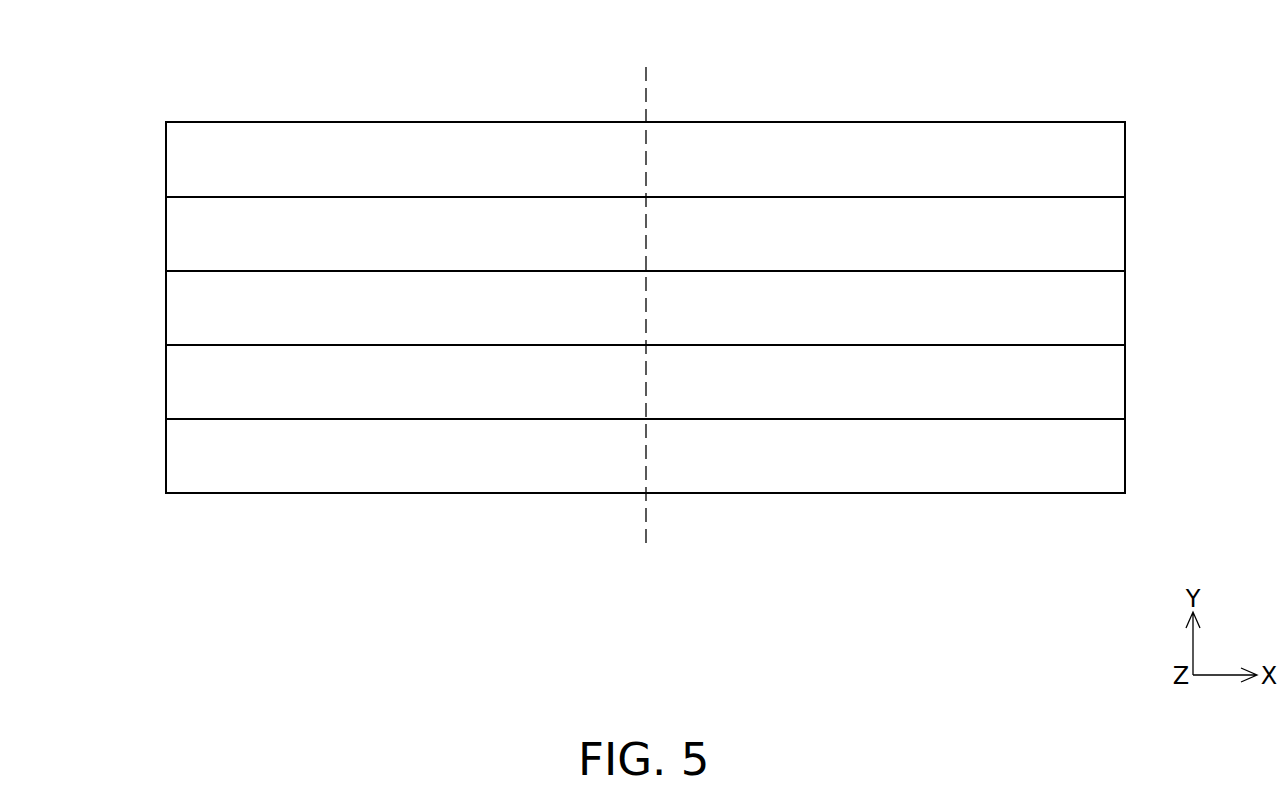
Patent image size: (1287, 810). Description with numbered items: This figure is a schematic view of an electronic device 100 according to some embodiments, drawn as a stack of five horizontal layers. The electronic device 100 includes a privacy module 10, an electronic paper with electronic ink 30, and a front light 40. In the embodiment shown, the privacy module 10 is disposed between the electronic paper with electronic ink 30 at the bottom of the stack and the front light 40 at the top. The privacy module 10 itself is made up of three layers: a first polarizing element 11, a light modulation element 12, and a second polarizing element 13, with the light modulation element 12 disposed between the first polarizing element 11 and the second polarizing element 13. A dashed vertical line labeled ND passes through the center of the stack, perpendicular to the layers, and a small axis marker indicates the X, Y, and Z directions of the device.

The electronic device 100 is at (165, 31).
The front light 40 is at (187, 160).
The privacy module 10 is at (108, 222).
The first polarizing element 11 is at (187, 233).
The light modulation element 12 is at (187, 308).
The second polarizing element 13 is at (187, 382).
The electronic paper with electronic ink 30 is at (187, 457).
The normal direction axis ND is at (646, 293).